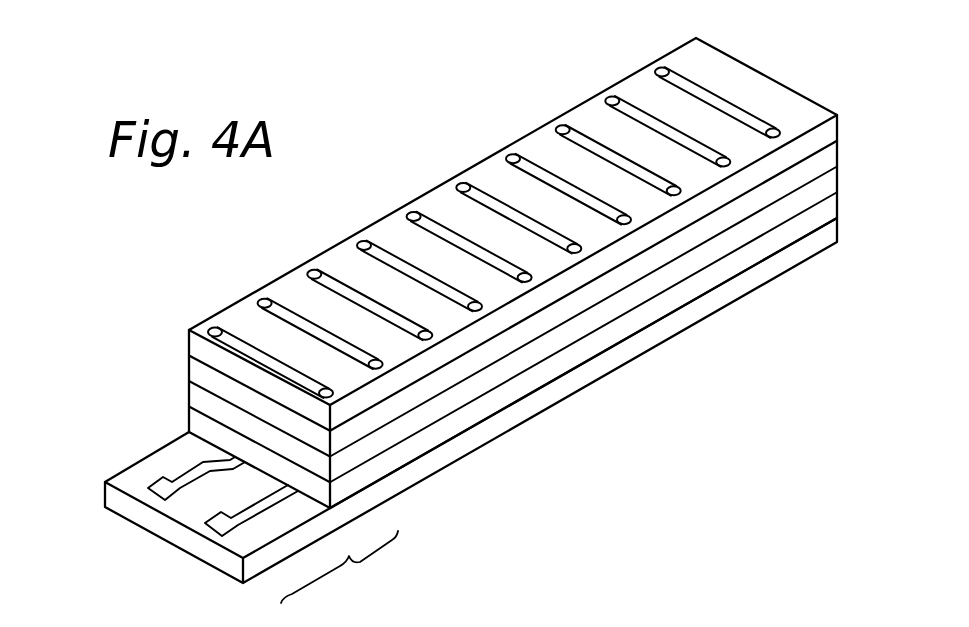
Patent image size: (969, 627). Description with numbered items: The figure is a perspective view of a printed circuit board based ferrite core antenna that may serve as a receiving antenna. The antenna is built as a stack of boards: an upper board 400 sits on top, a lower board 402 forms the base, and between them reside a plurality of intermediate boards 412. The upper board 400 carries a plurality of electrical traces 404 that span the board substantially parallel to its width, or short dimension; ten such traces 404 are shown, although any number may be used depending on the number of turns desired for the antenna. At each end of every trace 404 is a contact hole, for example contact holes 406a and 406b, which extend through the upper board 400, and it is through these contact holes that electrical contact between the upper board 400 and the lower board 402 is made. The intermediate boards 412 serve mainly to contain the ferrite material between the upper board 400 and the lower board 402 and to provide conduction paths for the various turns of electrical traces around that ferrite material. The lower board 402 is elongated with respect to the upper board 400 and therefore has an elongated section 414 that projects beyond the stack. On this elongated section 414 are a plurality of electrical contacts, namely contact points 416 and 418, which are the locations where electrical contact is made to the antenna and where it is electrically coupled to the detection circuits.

The upper board 400 is at (188, 349).
The intermediate board 412 is at (188, 422).
The lower board 402 is at (104, 487).
The electrical trace 404 is at (722, 102).
The contact hole 406a is at (666, 69).
The contact hole 406b is at (781, 129).
The elongated section 414 is at (339, 567).
The contact point 416 is at (147, 489).
The contact point 418 is at (210, 530).